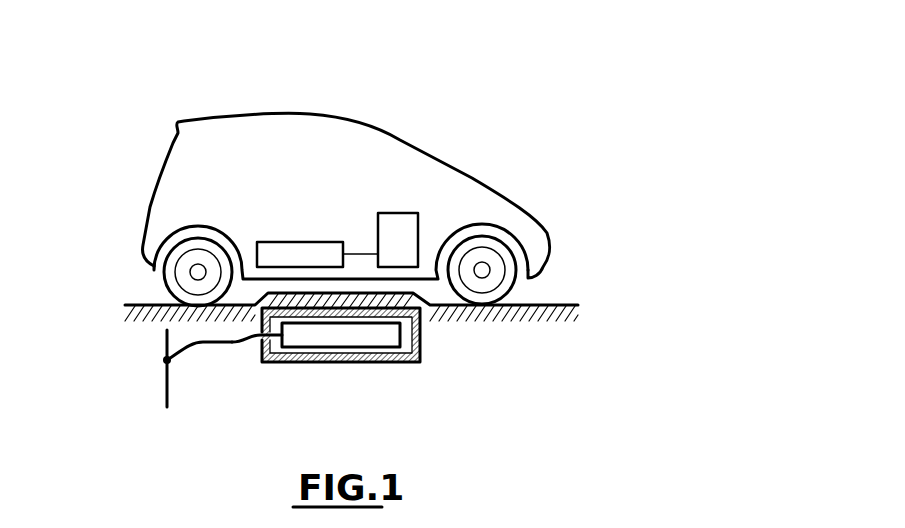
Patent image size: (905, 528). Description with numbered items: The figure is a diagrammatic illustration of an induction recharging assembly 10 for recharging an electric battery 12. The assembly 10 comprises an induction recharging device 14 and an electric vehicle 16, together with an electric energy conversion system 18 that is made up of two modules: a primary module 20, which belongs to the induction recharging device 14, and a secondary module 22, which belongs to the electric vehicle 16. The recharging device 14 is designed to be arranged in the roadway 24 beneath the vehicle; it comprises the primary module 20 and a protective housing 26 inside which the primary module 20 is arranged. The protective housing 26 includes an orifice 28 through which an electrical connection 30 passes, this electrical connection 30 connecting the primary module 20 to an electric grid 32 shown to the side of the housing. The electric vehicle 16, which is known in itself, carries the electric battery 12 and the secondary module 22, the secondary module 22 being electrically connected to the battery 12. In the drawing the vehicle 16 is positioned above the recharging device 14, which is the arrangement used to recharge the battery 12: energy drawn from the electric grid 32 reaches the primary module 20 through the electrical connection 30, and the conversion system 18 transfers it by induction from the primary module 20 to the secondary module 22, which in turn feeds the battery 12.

The induction recharging assembly 10 is at (530, 93).
The electric battery 12 is at (383, 230).
The induction recharging device 14 is at (395, 362).
The electric vehicle 16 is at (432, 142).
The electric energy conversion system 18 is at (441, 319).
The primary module 20 is at (337, 338).
The secondary module 22 is at (303, 247).
The roadway 24 is at (568, 302).
The protective housing 26 is at (395, 363).
The orifice 28 is at (258, 340).
The electrical connection 30 is at (198, 352).
The electric grid 32 is at (166, 395).